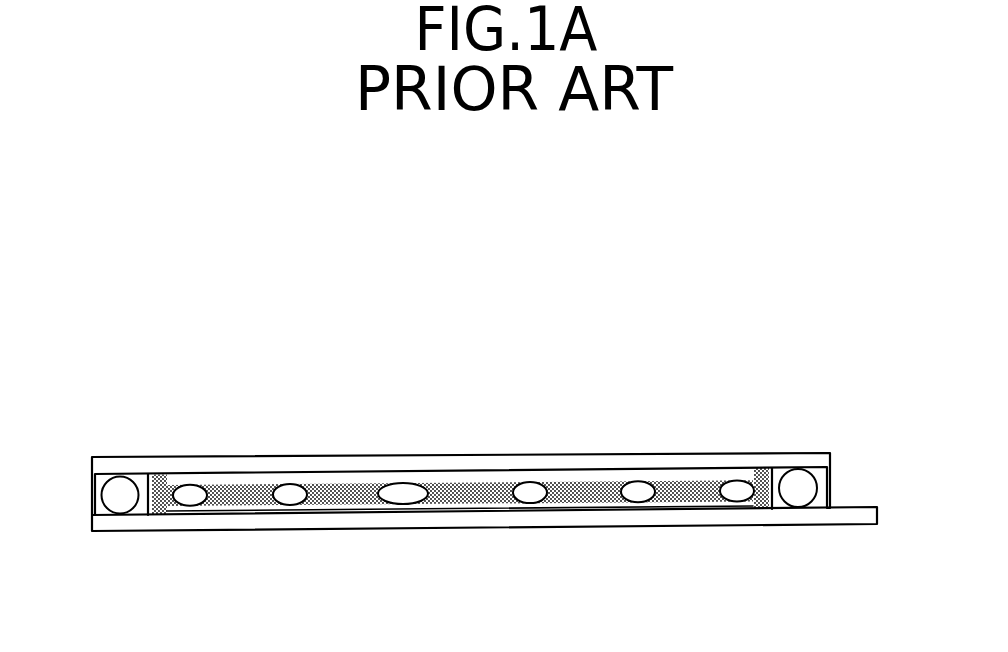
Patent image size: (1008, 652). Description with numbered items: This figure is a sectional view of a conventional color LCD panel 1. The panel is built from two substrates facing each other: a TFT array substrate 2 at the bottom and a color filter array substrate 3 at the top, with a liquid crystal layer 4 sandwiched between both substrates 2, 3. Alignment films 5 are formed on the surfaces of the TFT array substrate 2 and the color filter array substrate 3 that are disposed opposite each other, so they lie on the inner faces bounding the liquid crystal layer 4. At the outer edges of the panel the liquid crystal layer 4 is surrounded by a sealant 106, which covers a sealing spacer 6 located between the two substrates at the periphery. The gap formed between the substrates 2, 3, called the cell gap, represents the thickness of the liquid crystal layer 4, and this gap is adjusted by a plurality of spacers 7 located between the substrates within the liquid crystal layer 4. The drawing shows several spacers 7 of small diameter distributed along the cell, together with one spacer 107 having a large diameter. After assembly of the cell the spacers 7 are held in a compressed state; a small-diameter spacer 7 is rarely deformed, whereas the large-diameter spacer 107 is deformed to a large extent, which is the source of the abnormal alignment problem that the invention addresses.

The color LCD panel 1 is at (594, 279).
The TFT array substrate 2 is at (722, 515).
The color filter array substrate 3 is at (705, 457).
The liquid crystal layer 4 is at (347, 483).
The alignment films 5 is at (217, 487).
The sealing spacer 6 is at (128, 483).
The spacers 7 is at (190, 491).
The sealant 106 is at (102, 457).
The spacer having a large diameter 107 is at (403, 493).